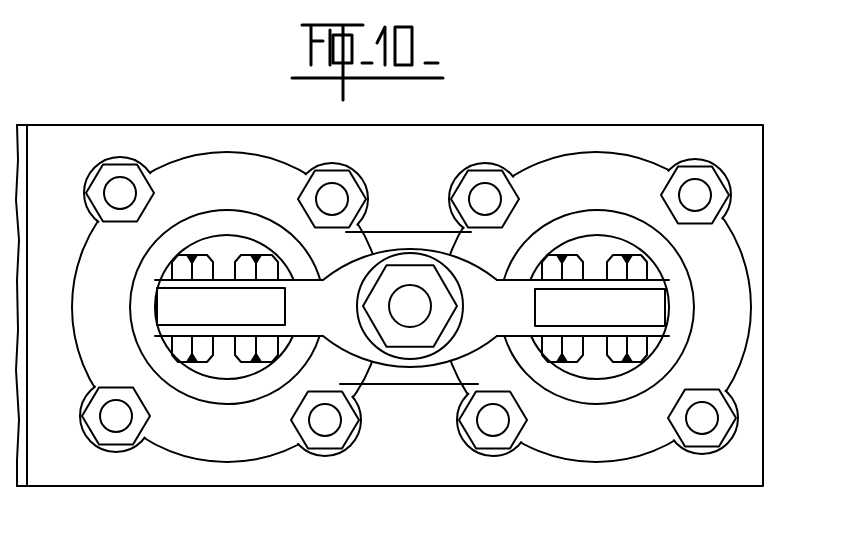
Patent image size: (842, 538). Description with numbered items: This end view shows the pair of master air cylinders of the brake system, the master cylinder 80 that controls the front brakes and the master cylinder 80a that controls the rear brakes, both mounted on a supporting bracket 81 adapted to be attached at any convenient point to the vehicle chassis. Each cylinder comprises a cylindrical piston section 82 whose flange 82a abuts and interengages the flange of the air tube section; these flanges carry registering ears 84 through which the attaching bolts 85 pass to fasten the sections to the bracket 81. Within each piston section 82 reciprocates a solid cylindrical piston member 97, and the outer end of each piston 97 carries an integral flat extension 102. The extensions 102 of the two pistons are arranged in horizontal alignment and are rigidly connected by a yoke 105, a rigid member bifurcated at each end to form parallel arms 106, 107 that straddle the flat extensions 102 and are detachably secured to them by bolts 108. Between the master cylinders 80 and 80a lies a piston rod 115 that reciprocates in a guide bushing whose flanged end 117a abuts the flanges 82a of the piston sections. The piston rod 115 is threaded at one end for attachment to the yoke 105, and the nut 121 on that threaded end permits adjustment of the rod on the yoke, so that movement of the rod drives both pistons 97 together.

The master cylinder 80 is at (205, 146).
The master cylinder 80a is at (592, 146).
The supporting bracket 81 is at (421, 488).
The piston section 82 is at (186, 216).
The flange 82a is at (95, 366).
The ear 84 is at (93, 182).
The attaching bolt 85 is at (121, 193).
The piston member 97 is at (221, 246).
The flat extension 102 is at (178, 303).
The yoke 105 is at (477, 331).
The parallel arm 106 is at (164, 280).
The parallel arm 107 is at (173, 330).
The bolt 108 is at (242, 363).
The piston rod 115 is at (408, 317).
The flange 117a is at (418, 372).
The nut 121 is at (436, 297).